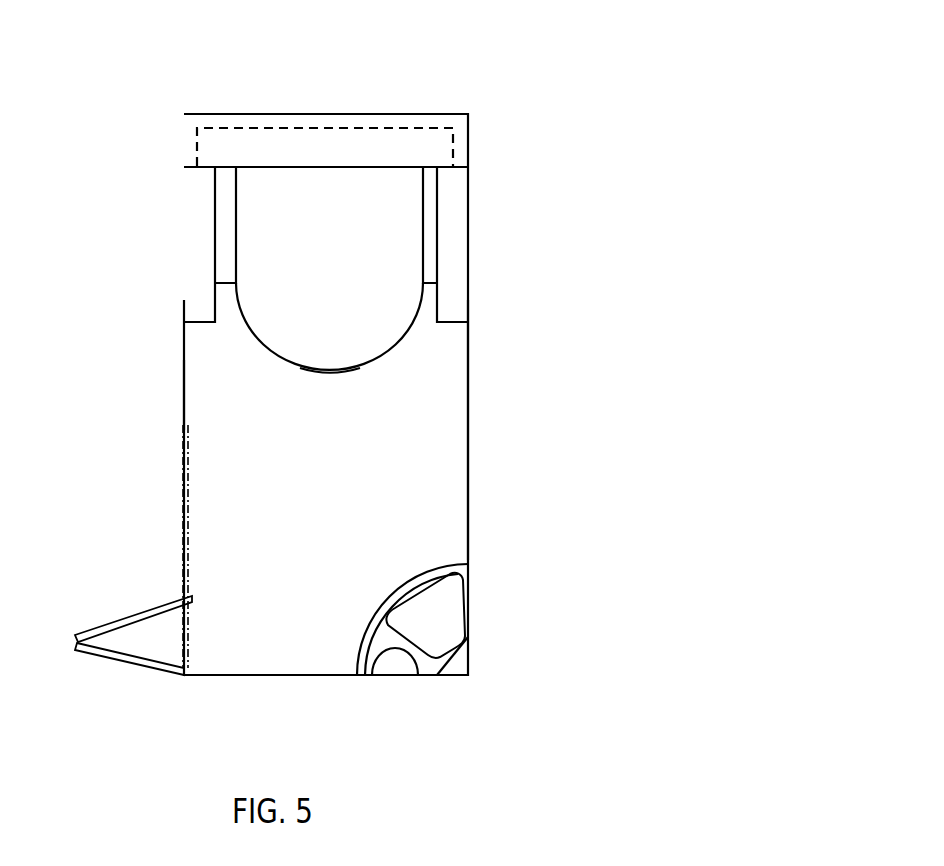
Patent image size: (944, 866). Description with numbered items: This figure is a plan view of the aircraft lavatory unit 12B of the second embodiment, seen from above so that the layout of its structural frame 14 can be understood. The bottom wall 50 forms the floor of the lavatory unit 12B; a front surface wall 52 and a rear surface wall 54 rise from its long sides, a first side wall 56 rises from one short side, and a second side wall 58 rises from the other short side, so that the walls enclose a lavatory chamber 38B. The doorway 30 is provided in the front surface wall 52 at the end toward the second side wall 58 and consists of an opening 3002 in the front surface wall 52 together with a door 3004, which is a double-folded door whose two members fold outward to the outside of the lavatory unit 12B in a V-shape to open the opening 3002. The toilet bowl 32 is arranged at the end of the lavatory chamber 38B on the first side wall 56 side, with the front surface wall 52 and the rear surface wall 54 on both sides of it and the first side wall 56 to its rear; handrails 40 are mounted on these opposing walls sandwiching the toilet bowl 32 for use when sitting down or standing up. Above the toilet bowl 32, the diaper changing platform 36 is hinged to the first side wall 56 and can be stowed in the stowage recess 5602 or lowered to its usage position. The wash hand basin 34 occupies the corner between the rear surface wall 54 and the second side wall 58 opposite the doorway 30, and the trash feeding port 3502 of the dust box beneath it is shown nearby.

The aircraft lavatory unit 12B is at (507, 113).
The first side wall 56 is at (312, 115).
The stowage recess 5602 is at (292, 133).
The handrails 40 is at (197, 232).
The diaper changing platform 36 is at (329, 167).
The toilet bowl 32 is at (343, 370).
The front surface wall 52 is at (183, 347).
The structural frame 14 is at (183, 392).
The rear surface wall 54 is at (468, 355).
The bottom wall 50 is at (417, 457).
The lavatory chamber 38B is at (342, 541).
The opening 3002 is at (185, 428).
The doorway 30 is at (173, 538).
The door 3004 is at (120, 657).
The second side wall 58 is at (307, 675).
The wash hand basin 34 is at (440, 618).
The trash feeding port 3502 is at (395, 665).